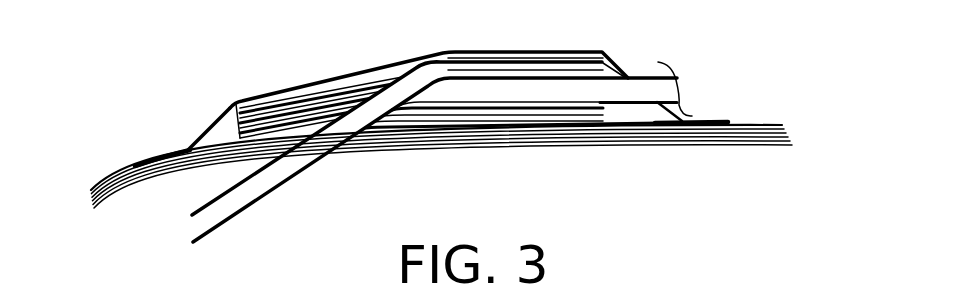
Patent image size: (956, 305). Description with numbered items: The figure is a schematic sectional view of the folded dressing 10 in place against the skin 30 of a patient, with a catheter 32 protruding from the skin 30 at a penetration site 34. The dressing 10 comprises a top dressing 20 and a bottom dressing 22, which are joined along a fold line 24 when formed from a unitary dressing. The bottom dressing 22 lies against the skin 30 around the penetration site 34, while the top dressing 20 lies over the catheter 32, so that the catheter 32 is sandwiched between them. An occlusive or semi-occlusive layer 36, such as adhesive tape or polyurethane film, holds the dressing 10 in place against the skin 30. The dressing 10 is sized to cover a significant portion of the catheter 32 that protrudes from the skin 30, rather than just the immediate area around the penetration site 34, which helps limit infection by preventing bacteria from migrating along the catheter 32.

The dressing 10 is at (292, 123).
The top dressing 20 is at (557, 52).
The bottom dressing 22 is at (558, 118).
The fold line 24 is at (237, 120).
The skin 30 is at (113, 180).
The catheter 32 is at (665, 88).
The penetration site 34 is at (403, 128).
The occlusive or semi-occlusive layer 36 is at (373, 70).